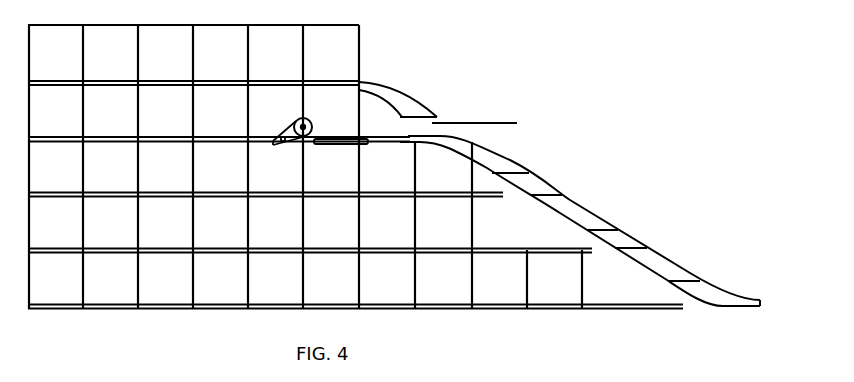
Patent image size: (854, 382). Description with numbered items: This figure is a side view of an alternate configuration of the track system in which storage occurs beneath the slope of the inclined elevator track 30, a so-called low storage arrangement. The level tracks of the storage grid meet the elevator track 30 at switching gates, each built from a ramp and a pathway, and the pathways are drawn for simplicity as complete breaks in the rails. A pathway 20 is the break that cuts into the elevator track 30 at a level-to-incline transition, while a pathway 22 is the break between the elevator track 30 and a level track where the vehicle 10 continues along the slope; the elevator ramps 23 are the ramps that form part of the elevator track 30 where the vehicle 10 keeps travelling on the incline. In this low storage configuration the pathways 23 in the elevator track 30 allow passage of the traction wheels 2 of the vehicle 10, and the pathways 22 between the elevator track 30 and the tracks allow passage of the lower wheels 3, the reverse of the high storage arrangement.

The traction wheel 2 is at (314, 120).
The lower wheel 3 is at (273, 146).
The vehicle 10 is at (297, 120).
The pathway 20 is at (493, 128).
The pathway 22 is at (603, 259).
The elevator ramp 23 is at (517, 199).
The inclined elevator track 30 is at (422, 105).